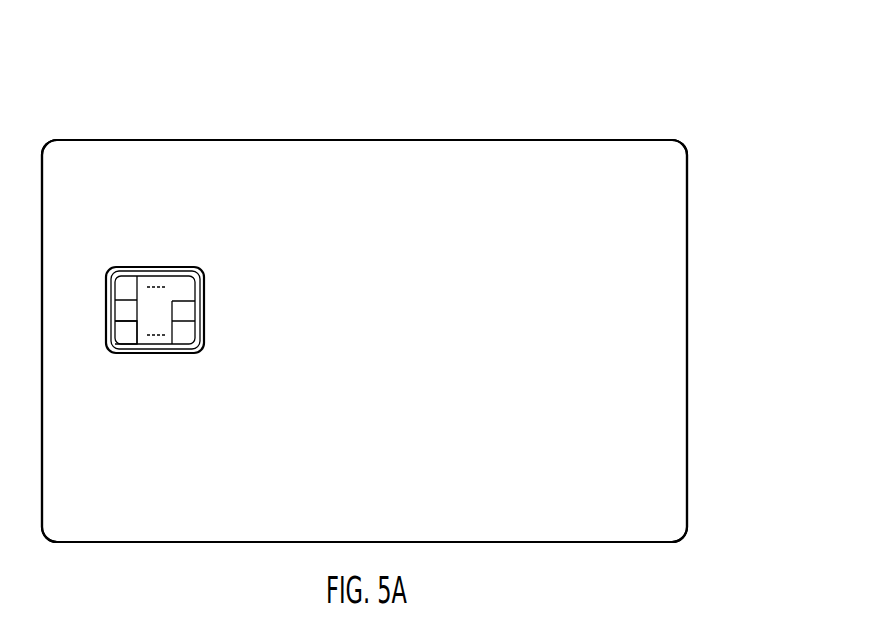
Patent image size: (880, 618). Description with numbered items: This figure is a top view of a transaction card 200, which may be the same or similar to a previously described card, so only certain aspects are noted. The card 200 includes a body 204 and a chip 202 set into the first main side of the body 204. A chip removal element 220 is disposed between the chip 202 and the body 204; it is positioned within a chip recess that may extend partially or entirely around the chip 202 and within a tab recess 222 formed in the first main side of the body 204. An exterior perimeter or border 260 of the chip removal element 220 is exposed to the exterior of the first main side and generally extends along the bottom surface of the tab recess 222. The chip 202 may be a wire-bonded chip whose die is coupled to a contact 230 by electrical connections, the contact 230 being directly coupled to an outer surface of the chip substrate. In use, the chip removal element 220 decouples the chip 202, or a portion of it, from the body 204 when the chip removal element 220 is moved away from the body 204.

The transaction card 200 is at (629, 95).
The chip 202 is at (152, 300).
The body 204 is at (658, 374).
The chip removal element 220 is at (175, 274).
The tab recess 222 is at (200, 270).
The contact 230 is at (129, 328).
The exterior perimeter or border 260 is at (185, 345).